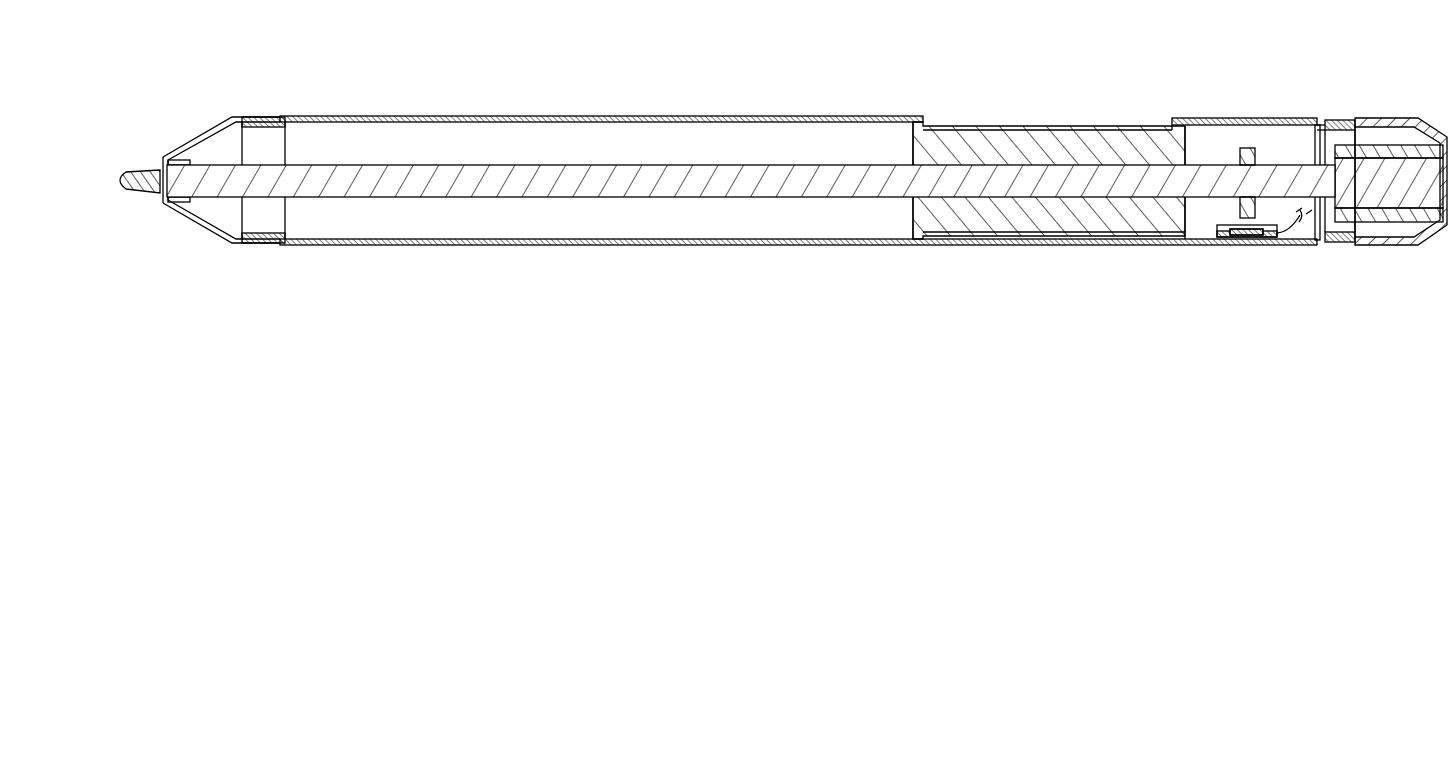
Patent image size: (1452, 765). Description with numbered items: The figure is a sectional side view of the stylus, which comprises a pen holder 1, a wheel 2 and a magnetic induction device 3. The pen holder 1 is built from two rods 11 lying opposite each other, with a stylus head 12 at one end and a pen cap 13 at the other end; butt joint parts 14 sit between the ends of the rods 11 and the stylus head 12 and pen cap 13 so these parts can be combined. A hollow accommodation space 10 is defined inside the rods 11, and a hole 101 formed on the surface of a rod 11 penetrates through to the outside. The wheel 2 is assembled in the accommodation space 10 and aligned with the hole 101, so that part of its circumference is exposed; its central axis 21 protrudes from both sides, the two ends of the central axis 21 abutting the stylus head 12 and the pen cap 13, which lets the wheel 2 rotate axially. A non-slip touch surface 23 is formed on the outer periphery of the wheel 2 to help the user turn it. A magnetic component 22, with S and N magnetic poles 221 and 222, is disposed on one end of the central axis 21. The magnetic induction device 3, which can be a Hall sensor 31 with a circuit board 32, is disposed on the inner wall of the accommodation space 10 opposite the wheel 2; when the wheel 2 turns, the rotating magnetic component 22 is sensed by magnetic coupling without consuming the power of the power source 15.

The pen holder 1 is at (783, 309).
The wheel 2 is at (751, 133).
The magnetic induction device 3 is at (1223, 316).
The accommodation space 10 is at (783, 186).
The hole 101 is at (928, 119).
The rods 11 is at (640, 246).
The stylus head 12 is at (212, 228).
The pen cap 13 is at (1405, 246).
The butt joint parts 14 is at (263, 243).
The power source 15 is at (1410, 150).
The central axis 21 is at (599, 155).
The magnetic component 22 is at (1252, 142).
The S magnetic pole 221 is at (1240, 150).
The N magnetic pole 222 is at (1262, 200).
The touch surface 23 is at (1010, 125).
The Hall sensor 31 is at (1240, 271).
The circuit board 32 is at (1212, 233).